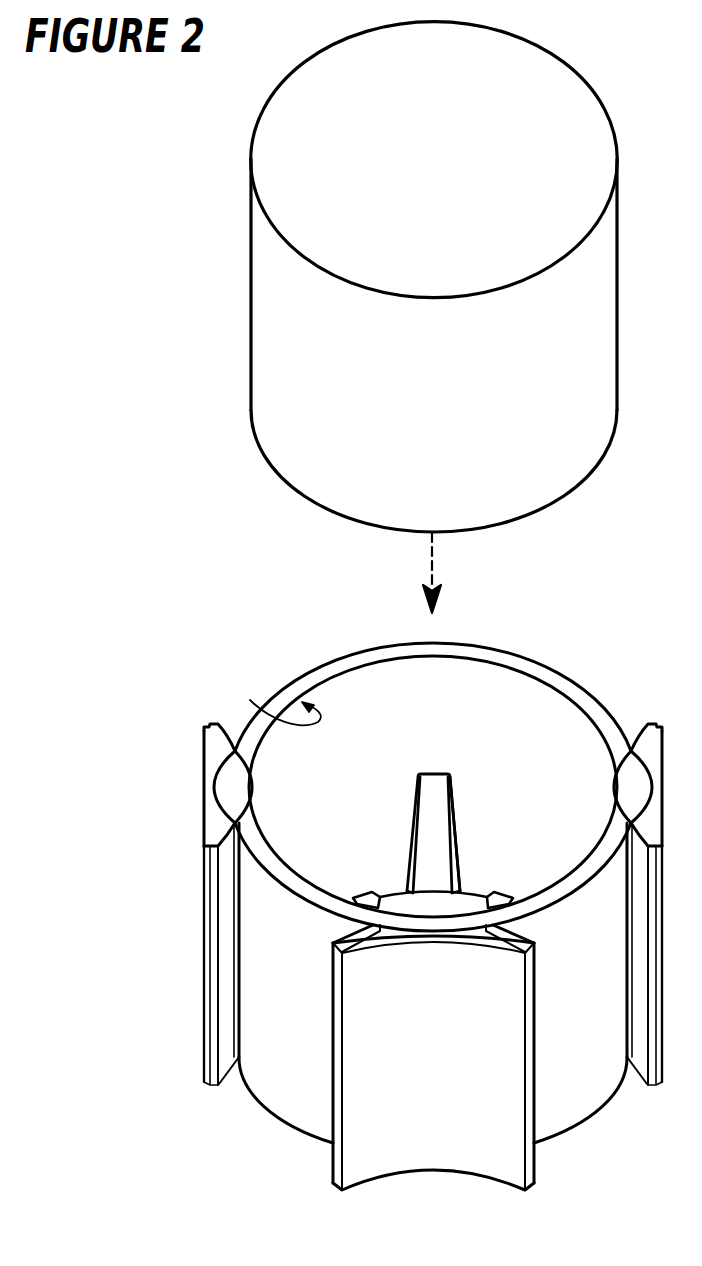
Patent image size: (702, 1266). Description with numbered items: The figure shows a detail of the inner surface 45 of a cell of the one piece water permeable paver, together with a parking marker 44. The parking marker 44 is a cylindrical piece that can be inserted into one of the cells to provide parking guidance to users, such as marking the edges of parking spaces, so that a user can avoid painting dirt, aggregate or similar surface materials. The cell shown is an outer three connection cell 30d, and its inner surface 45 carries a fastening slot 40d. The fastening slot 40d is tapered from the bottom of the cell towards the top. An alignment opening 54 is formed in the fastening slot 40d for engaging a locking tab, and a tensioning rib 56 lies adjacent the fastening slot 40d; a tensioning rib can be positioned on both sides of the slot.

The parking marker 44 is at (558, 85).
The outer three connection cell 30d is at (577, 665).
The inner surface 45 is at (278, 701).
The fastening slot 40d is at (433, 772).
The tensioning rib 56 is at (463, 877).
The alignment opening 54 is at (444, 895).